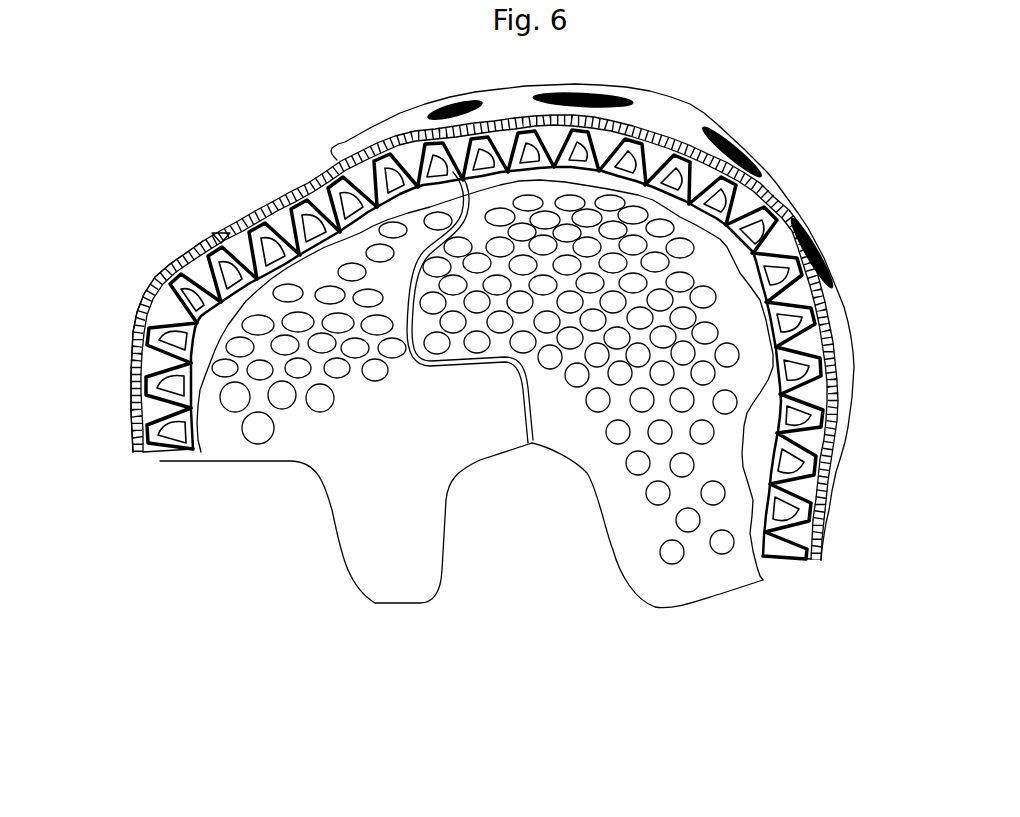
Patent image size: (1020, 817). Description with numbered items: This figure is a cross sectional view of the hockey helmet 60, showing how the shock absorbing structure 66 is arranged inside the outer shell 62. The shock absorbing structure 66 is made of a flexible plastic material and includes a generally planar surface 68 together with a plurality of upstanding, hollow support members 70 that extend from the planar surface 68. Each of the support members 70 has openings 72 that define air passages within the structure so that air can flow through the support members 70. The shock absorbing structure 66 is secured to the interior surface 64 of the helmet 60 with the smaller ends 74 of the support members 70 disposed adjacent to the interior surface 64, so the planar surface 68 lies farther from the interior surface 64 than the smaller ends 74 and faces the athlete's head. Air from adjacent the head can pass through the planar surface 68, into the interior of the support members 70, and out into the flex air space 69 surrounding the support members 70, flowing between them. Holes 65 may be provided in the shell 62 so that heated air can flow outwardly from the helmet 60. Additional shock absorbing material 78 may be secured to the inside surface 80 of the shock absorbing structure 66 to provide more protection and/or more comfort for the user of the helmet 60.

The hockey helmet 60 is at (300, 128).
The shell 62 is at (700, 115).
The interior surface 64 is at (333, 152).
The holes 65 is at (214, 234).
The shock absorbing structure 66 is at (290, 223).
The planar surface 68 is at (192, 420).
The flex air space 69 is at (320, 183).
The support members 70 is at (143, 296).
The openings 72 is at (150, 385).
The smaller ends 74 is at (166, 456).
The additional shock absorbing material 78 is at (762, 580).
The inside surface 80 is at (773, 400).